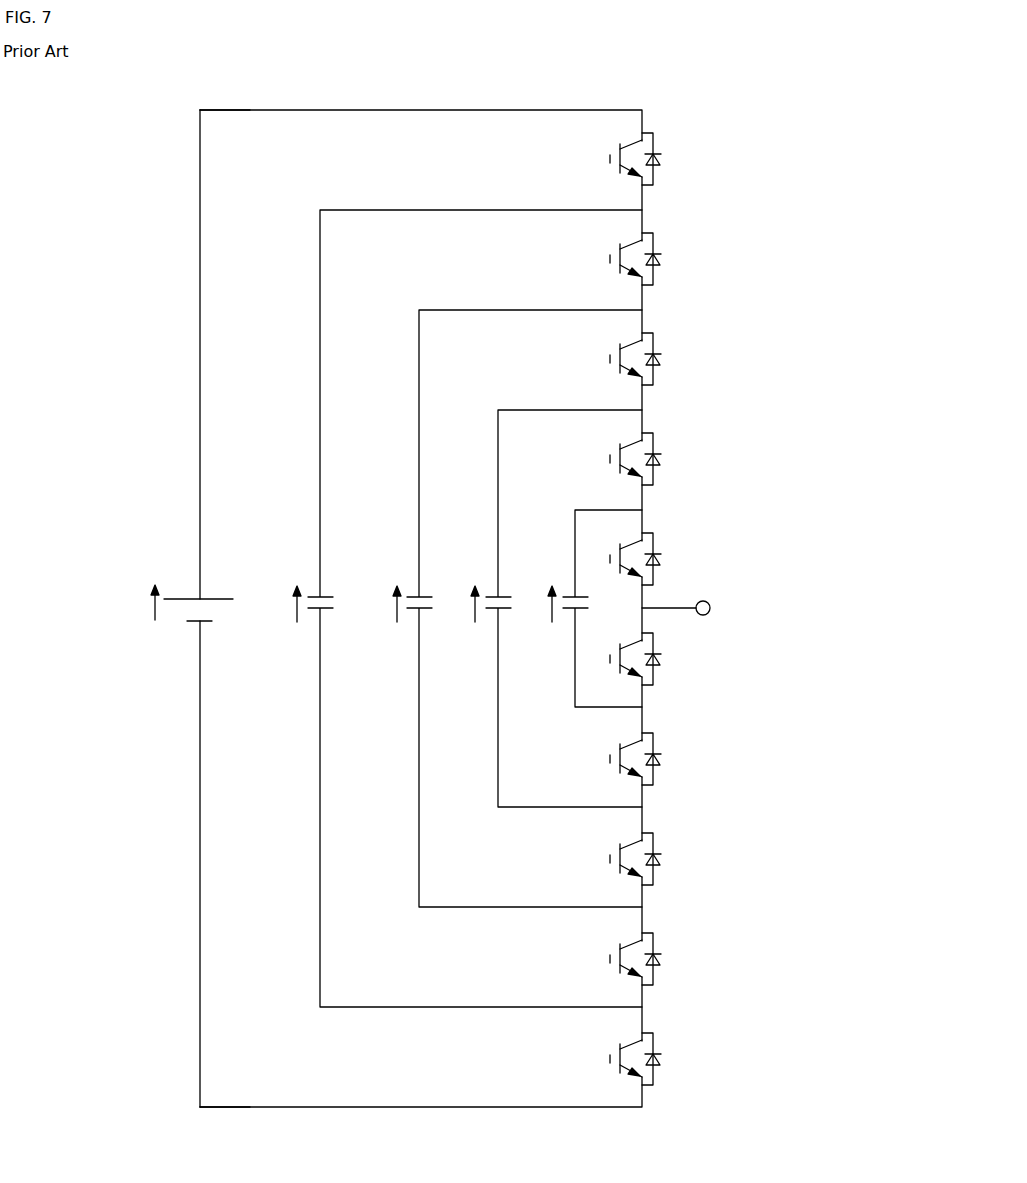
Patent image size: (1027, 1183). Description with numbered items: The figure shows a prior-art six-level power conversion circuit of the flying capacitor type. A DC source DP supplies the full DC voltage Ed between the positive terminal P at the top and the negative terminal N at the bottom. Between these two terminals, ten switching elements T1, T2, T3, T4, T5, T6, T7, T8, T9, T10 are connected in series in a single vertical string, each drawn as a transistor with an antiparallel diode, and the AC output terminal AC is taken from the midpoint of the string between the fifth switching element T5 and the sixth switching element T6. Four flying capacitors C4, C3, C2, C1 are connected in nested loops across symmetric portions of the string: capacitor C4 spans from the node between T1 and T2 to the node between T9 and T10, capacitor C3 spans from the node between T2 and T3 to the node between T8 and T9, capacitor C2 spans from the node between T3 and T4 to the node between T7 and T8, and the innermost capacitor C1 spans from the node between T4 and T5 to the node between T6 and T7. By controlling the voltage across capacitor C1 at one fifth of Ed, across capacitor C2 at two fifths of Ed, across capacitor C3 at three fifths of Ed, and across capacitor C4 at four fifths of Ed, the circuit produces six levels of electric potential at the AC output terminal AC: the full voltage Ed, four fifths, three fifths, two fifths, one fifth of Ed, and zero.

The switching element (IGBT with antiparallel diode) T1 is at (648, 159).
The switching element T2 is at (648, 259).
The switching element T3 is at (648, 359).
The switching element T4 is at (648, 459).
The switching element T5 is at (648, 559).
The switching element T6 is at (648, 659).
The switching element T7 is at (648, 759).
The switching element T8 is at (648, 859).
The switching element T9 is at (648, 959).
The switching element T10 is at (653, 1059).
The capacitor C1 is at (577, 608).
The capacitor C2 is at (535, 608).
The capacitor C3 is at (493, 608).
The capacitor C4 is at (443, 608).
The DC power supply DP is at (194, 608).
The voltage Ed is at (136, 602).
The positive DC terminal P is at (207, 109).
The negative DC terminal N is at (206, 1111).
The AC output terminal AC is at (719, 608).